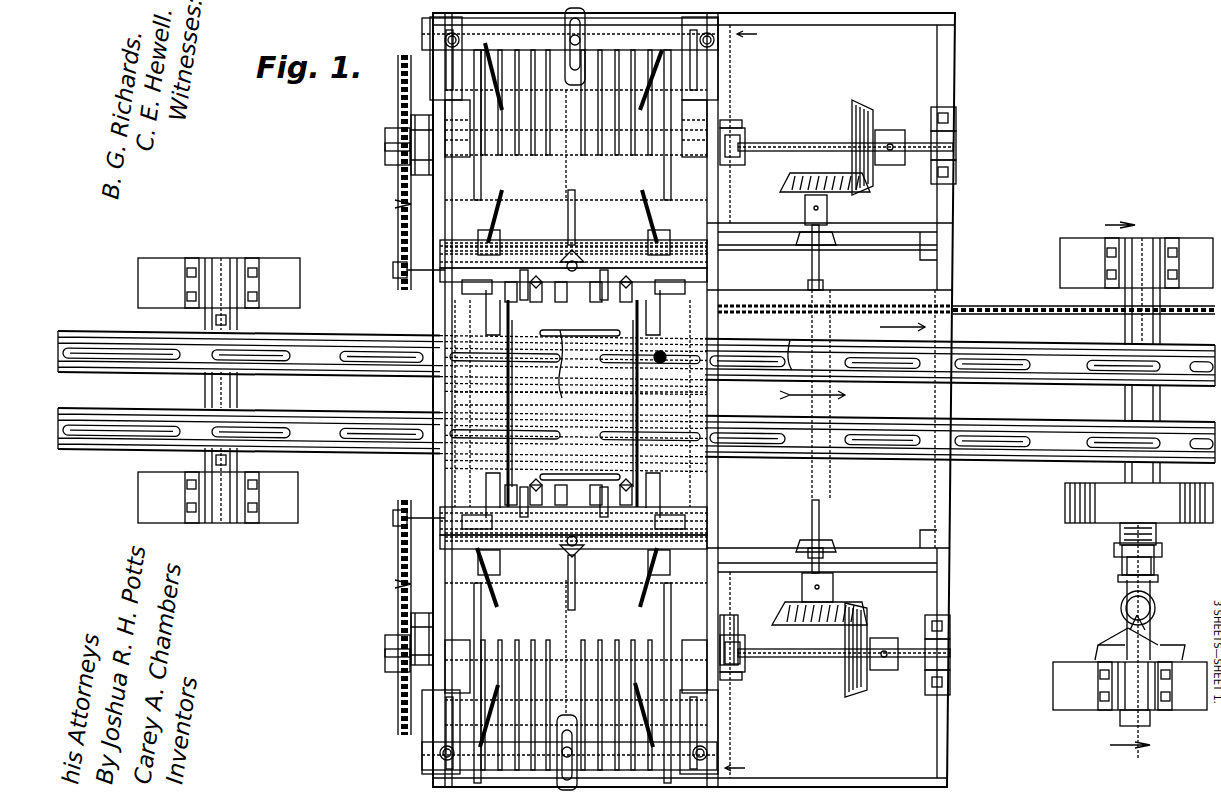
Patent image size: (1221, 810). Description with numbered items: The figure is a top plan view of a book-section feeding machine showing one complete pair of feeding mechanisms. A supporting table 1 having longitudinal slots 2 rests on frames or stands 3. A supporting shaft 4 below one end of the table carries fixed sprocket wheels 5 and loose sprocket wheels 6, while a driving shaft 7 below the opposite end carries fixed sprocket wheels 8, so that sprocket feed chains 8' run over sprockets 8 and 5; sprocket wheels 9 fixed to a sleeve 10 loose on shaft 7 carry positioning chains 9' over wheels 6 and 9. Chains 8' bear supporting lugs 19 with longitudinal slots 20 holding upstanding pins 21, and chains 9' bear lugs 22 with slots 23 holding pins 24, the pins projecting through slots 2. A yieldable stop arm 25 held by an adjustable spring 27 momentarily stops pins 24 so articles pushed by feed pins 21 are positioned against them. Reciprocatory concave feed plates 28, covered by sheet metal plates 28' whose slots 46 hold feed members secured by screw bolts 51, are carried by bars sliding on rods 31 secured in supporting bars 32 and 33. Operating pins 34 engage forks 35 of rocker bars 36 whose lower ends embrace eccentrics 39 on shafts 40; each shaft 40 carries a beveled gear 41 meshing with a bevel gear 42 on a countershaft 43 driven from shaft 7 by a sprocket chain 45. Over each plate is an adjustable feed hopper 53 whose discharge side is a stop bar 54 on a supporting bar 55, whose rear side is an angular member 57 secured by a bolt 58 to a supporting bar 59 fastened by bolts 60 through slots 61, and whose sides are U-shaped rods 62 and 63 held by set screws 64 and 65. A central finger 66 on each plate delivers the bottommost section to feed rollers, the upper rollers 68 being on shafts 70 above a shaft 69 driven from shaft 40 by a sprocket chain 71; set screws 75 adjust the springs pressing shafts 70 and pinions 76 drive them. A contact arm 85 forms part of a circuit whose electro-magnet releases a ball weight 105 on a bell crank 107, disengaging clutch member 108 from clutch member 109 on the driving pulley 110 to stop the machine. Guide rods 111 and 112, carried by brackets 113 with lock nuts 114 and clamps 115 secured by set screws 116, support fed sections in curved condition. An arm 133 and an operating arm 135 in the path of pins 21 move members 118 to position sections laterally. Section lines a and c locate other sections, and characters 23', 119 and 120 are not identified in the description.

The supporting table 1 is at (759, 392).
The longitudinal slots 2 is at (812, 416).
The frames or stands 3 is at (447, 213).
The supporting shaft 4 is at (226, 258).
The sprocket wheels 5 is at (336, 396).
The sprocket wheels 6 is at (332, 372).
The driving shaft 7 is at (1150, 240).
The sprocket wheels 8 is at (636, 413).
The sprocket feed chains 8' is at (682, 396).
The sprocket wheels 9 is at (1064, 366).
The positioning chains 9' is at (676, 401).
The sleeve 10 is at (1162, 400).
The supporting lugs 19 is at (617, 409).
The longitudinal slot 20 is at (636, 405).
The upstanding pins 21 is at (1122, 655).
The supporting lugs 22 is at (633, 404).
The longitudinal adjusting slots 23 is at (744, 537).
The slot strip 23' is at (1076, 741).
The upstanding pins 24 is at (634, 428).
The yieldable stop arm 25 is at (590, 357).
The adjustable spring 27 is at (422, 401).
The reciprocatory concave feed plates 28 is at (514, 416).
The thin sheet metal plate 28' is at (600, 395).
The guiding and supporting rods 31 is at (650, 365).
The supporting bar 32 is at (757, 256).
The supporting bar 33 is at (857, 25).
The operating pin 34 is at (410, 135).
The fork 35 is at (410, 120).
The rocker bar 36 is at (582, 264).
The eccentric 39 is at (410, 160).
The shaft 40 is at (770, 143).
The beveled gear 41 is at (874, 173).
The bevel gear 42 is at (865, 195).
The countershaft 43 is at (822, 258).
The sprocket chain 45 is at (1000, 307).
The longitudinal slots 46 is at (515, 142).
The screw bolt 51 is at (497, 43).
The adjustable feed hopper 53 is at (576, 394).
The stop bar 54 is at (585, 250).
The supporting bar 55 is at (445, 249).
The angular member 57 is at (576, 80).
The bolt 58 is at (578, 752).
The supporting bar 59 is at (575, 40).
The bolts 60 is at (448, 38).
The slots 61 is at (445, 62).
The U-shaped rods 62 is at (505, 197).
The U-shaped rods 63 is at (430, 88).
The set screws 64 is at (760, 268).
The set screws 65 is at (700, 90).
The central finger 66 is at (580, 222).
The feed rollers 68 is at (531, 393).
The longitudinal shaft 69 is at (436, 272).
The shaft 70 is at (602, 561).
The sprocket chain 71 is at (403, 204).
The set screws 75 is at (544, 392).
The pinion 76 is at (583, 392).
The contact arm 85 is at (560, 471).
The ball weight 105 is at (1158, 612).
The bell crank 107 is at (1116, 550).
The clutch member 108 is at (1152, 560).
The clutch member 109 is at (1120, 530).
The driving pulley 110 is at (1100, 502).
The guide rods 111 is at (520, 392).
The guide rods 112 is at (506, 470).
The bracket 113 is at (576, 332).
The lock nuts 114 is at (572, 404).
The clamp 115 is at (500, 240).
The set screw 116 is at (492, 232).
The members 118 is at (558, 394).
The bar 119 is at (534, 334).
The knob 120 is at (662, 362).
The arm 133 is at (718, 324).
The operating arm 135 is at (718, 307).
The section line a— a is at (1127, 484).
The section line c— c is at (746, 401).